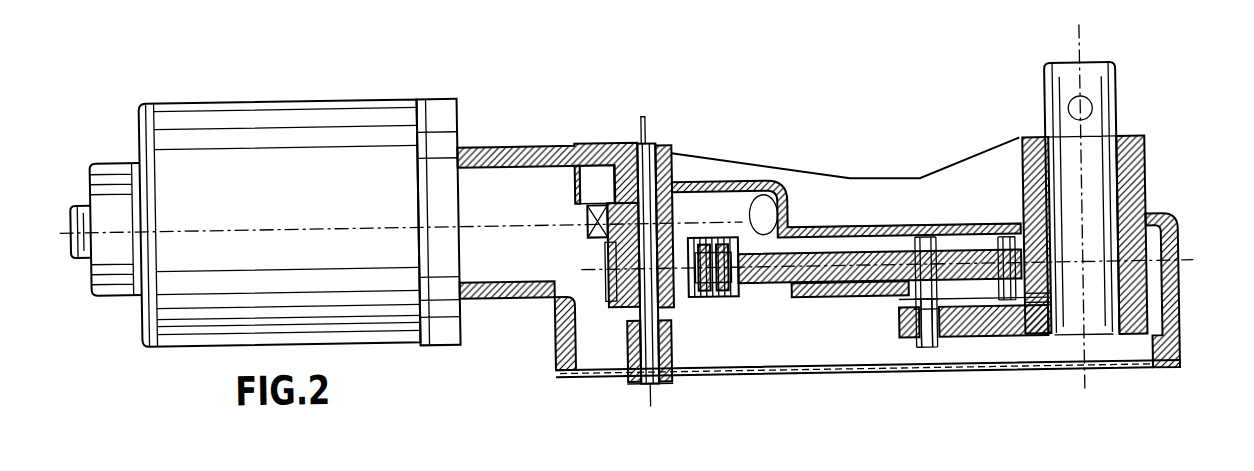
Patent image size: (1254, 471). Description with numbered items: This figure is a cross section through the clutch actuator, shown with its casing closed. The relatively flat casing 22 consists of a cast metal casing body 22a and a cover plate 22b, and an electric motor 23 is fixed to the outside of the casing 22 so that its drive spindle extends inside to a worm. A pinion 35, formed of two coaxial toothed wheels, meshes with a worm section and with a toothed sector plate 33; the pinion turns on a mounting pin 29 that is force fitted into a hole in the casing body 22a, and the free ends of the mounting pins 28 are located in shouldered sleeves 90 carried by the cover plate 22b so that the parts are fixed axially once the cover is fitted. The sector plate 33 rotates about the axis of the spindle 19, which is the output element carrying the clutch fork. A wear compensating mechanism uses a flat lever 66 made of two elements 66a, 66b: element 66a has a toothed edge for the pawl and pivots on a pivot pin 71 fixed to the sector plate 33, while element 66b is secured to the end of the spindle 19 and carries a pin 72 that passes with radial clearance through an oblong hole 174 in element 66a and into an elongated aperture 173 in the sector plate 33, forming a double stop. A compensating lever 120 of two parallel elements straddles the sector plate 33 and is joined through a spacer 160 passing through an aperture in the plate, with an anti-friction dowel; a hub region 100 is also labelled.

The spindle 19 is at (1062, 96).
The casing 22 is at (539, 296).
The casing body 22a is at (472, 136).
The cover plate 22b is at (587, 373).
The electric motor 23 is at (285, 92).
The mounting pins 28 is at (667, 150).
The mounting pin for pinion 29 is at (649, 136).
The toothed sector plate 33 is at (856, 227).
The pinion 35 is at (731, 240).
The flat lever 66 is at (832, 305).
The lever element 66a is at (872, 300).
The lever element 66b is at (988, 340).
The pivot pin 71 is at (1038, 341).
The pin 72 is at (931, 344).
The shouldered sleeves 90 is at (714, 295).
The bearing hub 100 is at (773, 183).
The compensating lever 120 is at (743, 238).
The spacer 160 is at (728, 295).
The aperture 173 is at (922, 246).
The oblong hole 174 is at (937, 246).